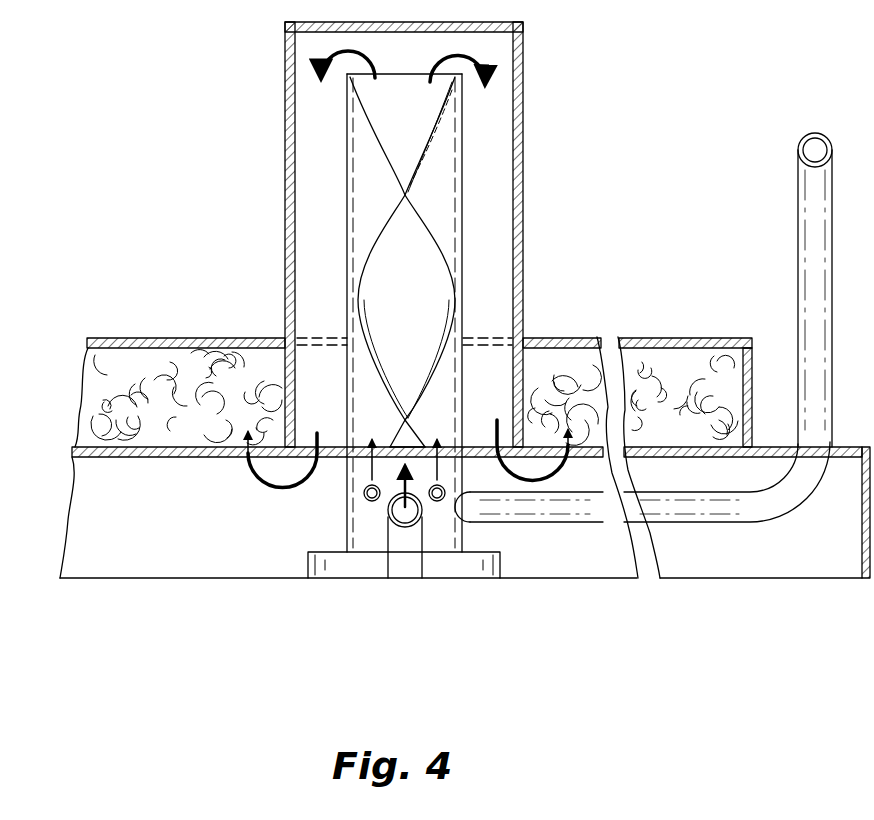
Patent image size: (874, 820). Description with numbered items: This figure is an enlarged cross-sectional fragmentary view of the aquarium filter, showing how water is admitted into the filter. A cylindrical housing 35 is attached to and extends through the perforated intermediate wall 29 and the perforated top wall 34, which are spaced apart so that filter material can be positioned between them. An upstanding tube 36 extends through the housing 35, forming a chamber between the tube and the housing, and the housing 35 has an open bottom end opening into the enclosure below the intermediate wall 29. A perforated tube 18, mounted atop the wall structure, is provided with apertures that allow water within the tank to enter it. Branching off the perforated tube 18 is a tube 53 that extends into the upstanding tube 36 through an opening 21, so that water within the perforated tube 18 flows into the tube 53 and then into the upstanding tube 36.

The perforated tube 18 is at (815, 133).
The opening 21 is at (448, 512).
The intermediate wall 29 is at (96, 447).
The top wall 34 is at (134, 338).
The cylindrical housing 35 is at (523, 173).
The upstanding tube 36 is at (462, 290).
The tube 53 is at (558, 524).